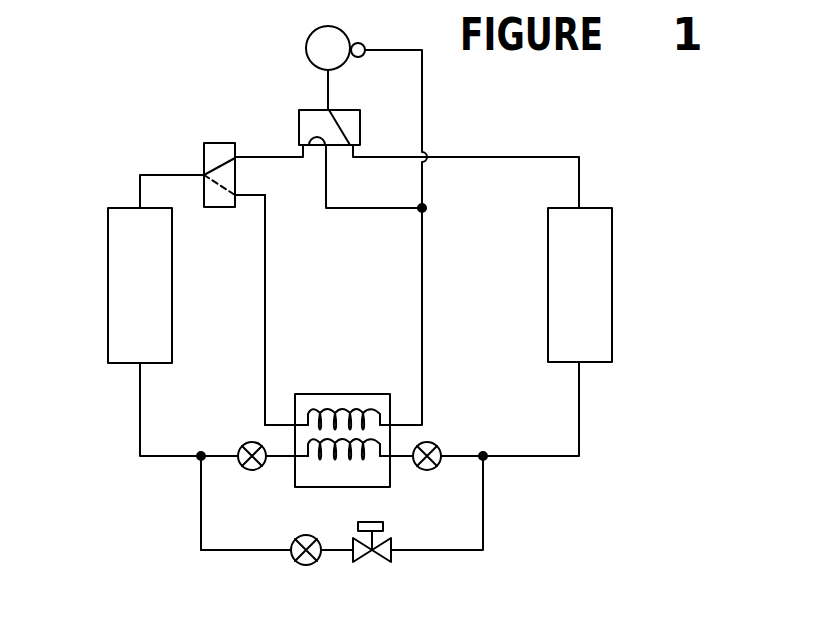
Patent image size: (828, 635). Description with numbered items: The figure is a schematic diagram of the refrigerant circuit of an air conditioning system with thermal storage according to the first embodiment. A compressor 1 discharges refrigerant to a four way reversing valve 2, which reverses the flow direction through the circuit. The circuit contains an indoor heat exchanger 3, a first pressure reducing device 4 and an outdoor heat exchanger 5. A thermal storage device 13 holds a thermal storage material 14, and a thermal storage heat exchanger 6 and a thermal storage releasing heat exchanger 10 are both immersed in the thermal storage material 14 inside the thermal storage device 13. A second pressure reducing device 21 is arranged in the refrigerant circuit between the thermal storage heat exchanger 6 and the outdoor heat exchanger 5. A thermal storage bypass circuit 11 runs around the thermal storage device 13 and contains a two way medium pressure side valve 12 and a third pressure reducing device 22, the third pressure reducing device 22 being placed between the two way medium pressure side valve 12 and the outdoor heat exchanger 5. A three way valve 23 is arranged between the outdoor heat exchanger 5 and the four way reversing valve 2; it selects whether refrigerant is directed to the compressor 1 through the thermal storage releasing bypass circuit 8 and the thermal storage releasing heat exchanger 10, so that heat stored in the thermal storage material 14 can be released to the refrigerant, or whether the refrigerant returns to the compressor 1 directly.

The compressor 1 is at (306, 48).
The four way reversing valve 2 is at (299, 125).
The indoor heat exchanger 3 is at (605, 208).
The first pressure reducing device 4 is at (438, 444).
The outdoor heat exchanger 5 is at (115, 208).
The thermal storage heat exchanger 6 is at (368, 449).
The thermal storage releasing bypass circuit 8 is at (265, 256).
The thermal storage releasing heat exchanger 10 is at (306, 410).
The thermal storage bypass circuit 11 is at (220, 552).
The two way medium pressure side valve 12 is at (375, 563).
The thermal storage device 13 is at (338, 394).
The thermal storage material 14 is at (368, 403).
The second pressure reducing device 21 is at (245, 444).
The third pressure reducing device 22 is at (296, 562).
The three way valve 23 is at (218, 143).